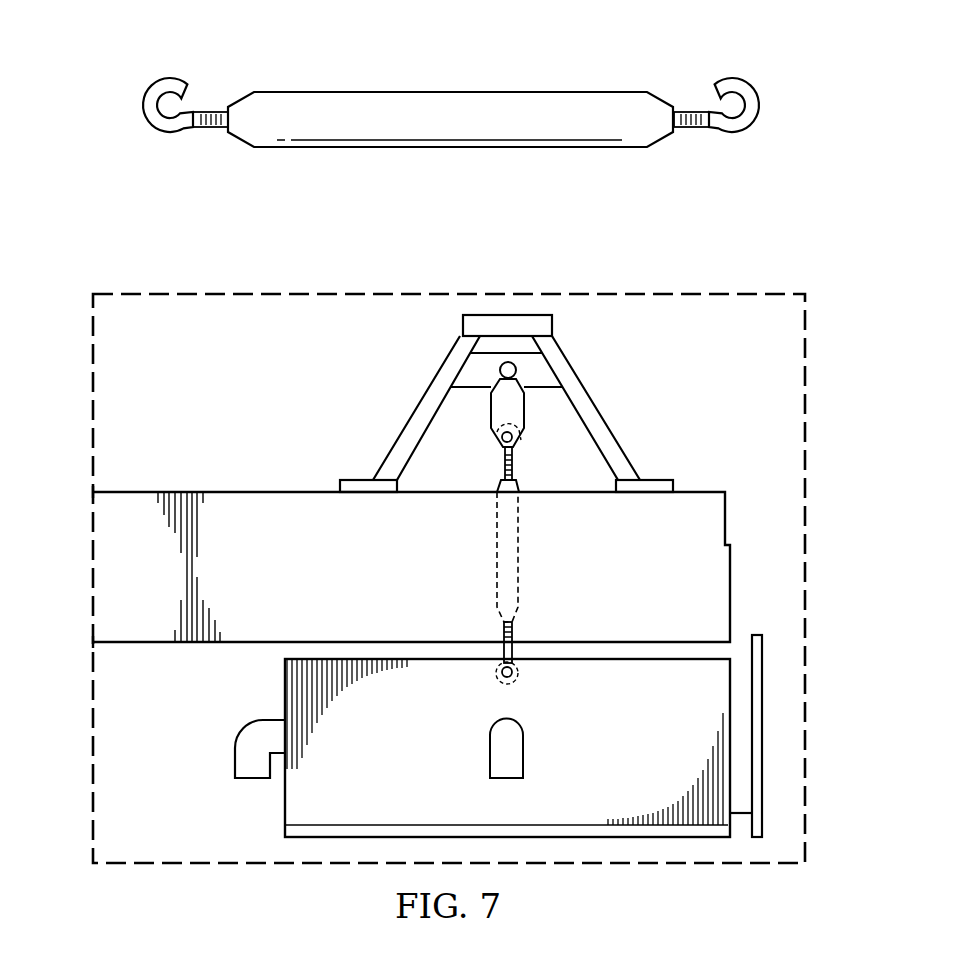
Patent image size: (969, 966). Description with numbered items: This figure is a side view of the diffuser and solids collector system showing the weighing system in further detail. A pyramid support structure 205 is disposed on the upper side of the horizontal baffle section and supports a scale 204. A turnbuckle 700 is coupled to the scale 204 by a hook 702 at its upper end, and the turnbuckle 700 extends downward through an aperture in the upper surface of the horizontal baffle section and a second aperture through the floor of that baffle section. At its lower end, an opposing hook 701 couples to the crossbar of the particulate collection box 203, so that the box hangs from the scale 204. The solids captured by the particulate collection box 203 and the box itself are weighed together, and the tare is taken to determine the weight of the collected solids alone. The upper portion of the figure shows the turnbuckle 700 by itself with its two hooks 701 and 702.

The turnbuckle 700 is at (449, 92).
The opposing hook 701 is at (758, 105).
The hook 702 is at (145, 102).
The particulate collection box 203 is at (285, 801).
The scale 204 is at (496, 428).
The pyramid support structure 205 is at (590, 395).